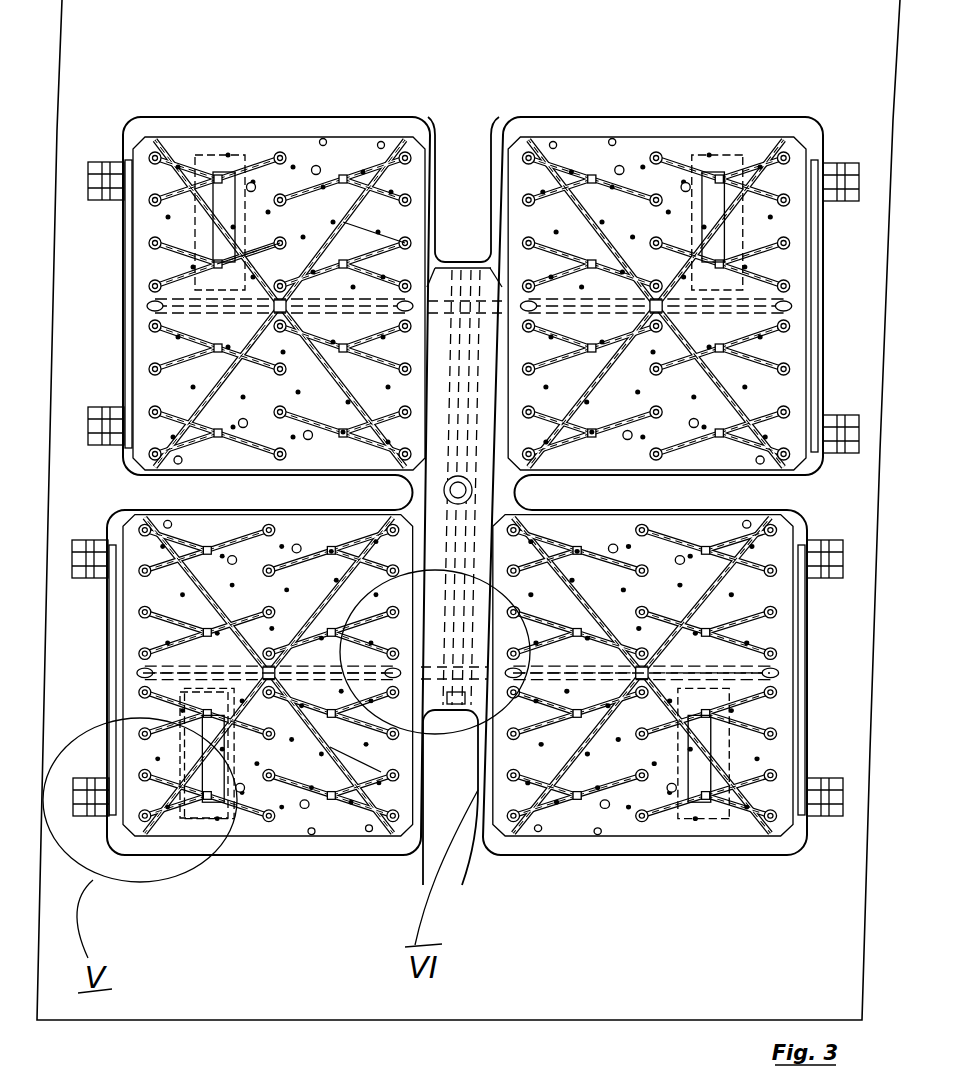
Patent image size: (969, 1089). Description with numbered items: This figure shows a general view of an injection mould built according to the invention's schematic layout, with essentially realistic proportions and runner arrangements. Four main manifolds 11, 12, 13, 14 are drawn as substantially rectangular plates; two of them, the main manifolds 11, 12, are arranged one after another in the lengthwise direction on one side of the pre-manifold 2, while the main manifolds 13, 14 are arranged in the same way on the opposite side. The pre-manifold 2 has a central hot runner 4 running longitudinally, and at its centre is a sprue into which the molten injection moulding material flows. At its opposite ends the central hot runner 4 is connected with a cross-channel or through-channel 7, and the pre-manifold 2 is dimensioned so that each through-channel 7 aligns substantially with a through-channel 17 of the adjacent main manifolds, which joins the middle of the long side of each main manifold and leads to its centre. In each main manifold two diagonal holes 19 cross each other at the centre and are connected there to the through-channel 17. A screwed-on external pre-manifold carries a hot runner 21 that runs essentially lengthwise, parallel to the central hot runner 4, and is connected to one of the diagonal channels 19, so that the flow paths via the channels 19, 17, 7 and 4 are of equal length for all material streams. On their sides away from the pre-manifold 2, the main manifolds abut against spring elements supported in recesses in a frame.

The pre-manifold 2 is at (418, 697).
The central hot runner 4 is at (455, 341).
The through-channel 7 is at (500, 312).
The main manifold 11 is at (678, 137).
The main manifold 12 is at (642, 842).
The main manifold 13 is at (348, 137).
The main manifold 14 is at (308, 845).
The through-channel 17 is at (352, 676).
The diagonal holes 19 is at (325, 236).
The hot runner 21 is at (178, 790).